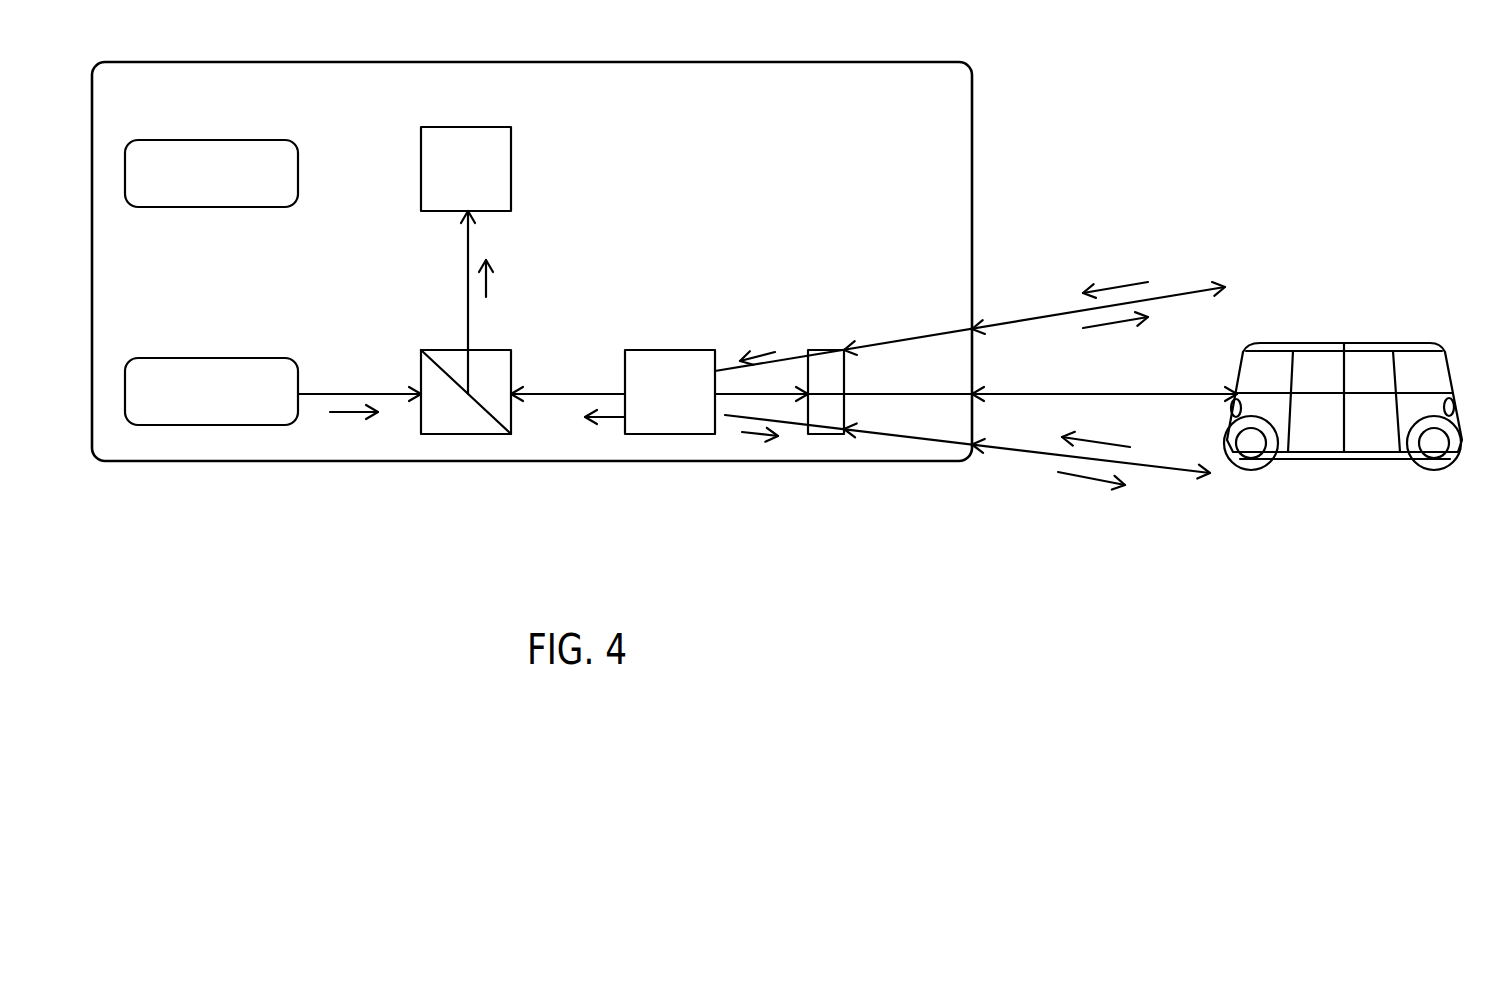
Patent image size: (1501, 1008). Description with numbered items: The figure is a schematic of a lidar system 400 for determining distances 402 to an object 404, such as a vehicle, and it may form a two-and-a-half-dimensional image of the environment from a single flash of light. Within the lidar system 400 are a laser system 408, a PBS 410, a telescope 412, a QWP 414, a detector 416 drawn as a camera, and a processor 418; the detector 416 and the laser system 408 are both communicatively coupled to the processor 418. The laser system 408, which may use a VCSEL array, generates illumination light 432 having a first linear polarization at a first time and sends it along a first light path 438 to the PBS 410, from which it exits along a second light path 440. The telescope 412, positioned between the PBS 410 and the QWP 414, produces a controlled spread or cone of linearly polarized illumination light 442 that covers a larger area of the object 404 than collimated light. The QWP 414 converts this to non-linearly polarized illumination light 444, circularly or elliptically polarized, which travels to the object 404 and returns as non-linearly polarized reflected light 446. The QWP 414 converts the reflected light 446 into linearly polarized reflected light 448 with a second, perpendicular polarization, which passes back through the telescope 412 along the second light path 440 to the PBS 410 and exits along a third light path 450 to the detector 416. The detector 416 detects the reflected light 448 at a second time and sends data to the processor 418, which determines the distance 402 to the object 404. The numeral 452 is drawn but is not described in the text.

The lidar system 400 is at (272, 91).
The distances 402 is at (1015, 320).
The object 404 is at (1350, 343).
The laser system 408 is at (195, 402).
The PBS 410 is at (431, 350).
The telescope 412 is at (633, 350).
The QWP 414 is at (808, 350).
The detector 416 is at (511, 186).
The processor 418 is at (275, 208).
The illumination light 432 is at (357, 415).
The first light path 438 is at (363, 393).
The second light path 440 is at (560, 393).
The linearly polarized illumination light 442 is at (756, 437).
The non-linearly polarized illumination light 444 is at (1125, 325).
The non-linearly polarized reflected light 446 is at (1127, 290).
The linearly polarized reflected light 448 is at (486, 278).
The third light path 450 is at (468, 248).
The light transmitted back toward PBS 452 is at (600, 420).